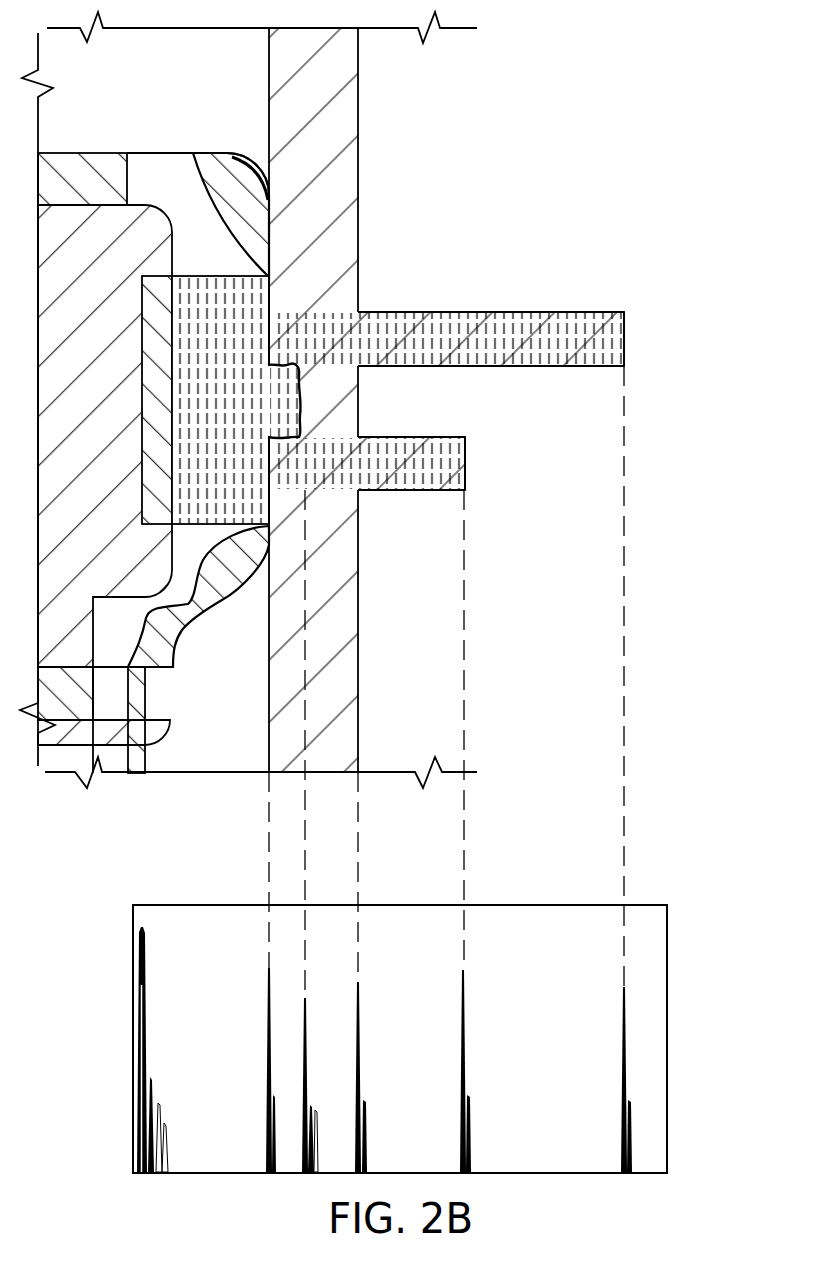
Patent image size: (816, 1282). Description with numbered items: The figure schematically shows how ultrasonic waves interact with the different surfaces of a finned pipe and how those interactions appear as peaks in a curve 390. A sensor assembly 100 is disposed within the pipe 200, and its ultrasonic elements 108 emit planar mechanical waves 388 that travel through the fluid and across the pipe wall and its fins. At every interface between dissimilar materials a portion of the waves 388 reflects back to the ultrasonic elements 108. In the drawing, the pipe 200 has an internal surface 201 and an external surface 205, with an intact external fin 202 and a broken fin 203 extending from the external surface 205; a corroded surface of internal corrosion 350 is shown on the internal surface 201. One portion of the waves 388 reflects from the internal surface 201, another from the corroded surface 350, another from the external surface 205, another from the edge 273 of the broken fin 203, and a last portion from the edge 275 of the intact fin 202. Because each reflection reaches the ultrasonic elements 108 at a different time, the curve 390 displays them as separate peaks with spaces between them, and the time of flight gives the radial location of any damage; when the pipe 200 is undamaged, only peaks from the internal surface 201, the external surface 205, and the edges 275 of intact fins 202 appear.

The sensor assembly 100 is at (122, 106).
The ultrasonic elements 108 is at (152, 378).
The mechanical waves 388 is at (211, 298).
The pipe 200 is at (447, 400).
The internal surface 201 is at (269, 62).
The external surface 205 is at (358, 172).
The external fins 202 is at (530, 309).
The edge of intact fin 275 is at (617, 345).
The broken fin 203 is at (450, 486).
The edge of broken fin 273 is at (456, 457).
The internal corrosion 350 is at (298, 388).
The curve 390 is at (700, 935).